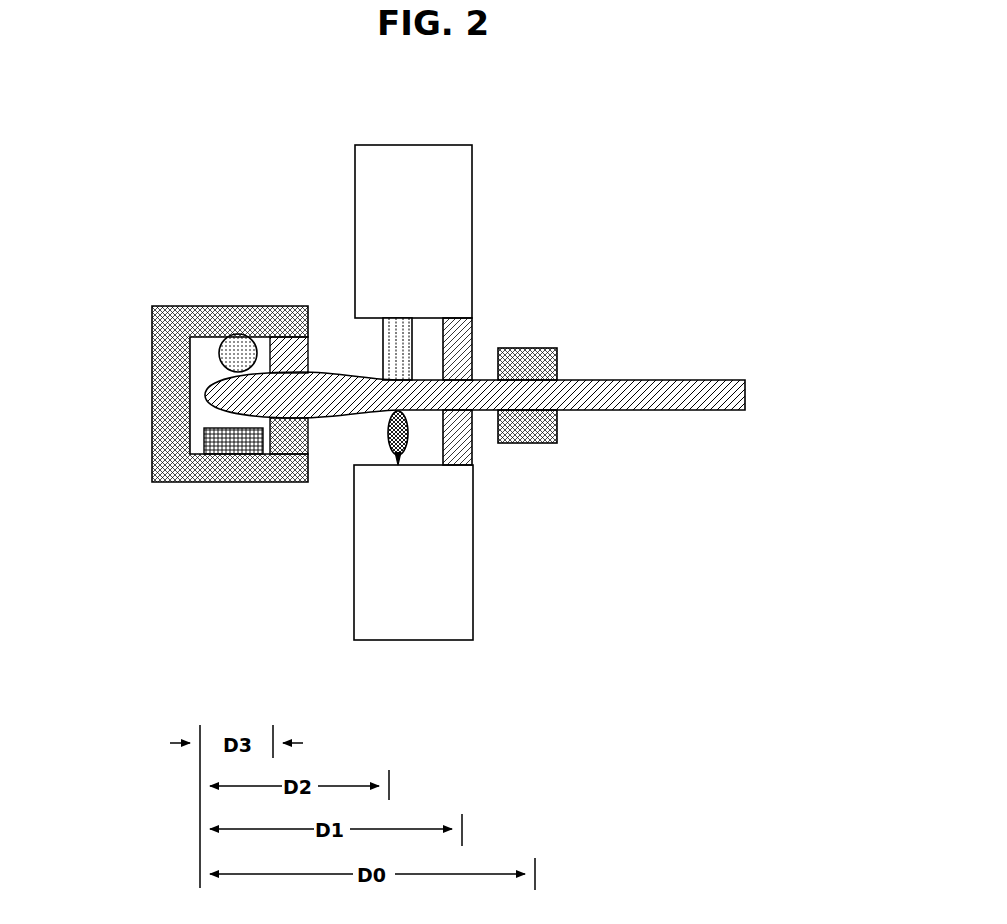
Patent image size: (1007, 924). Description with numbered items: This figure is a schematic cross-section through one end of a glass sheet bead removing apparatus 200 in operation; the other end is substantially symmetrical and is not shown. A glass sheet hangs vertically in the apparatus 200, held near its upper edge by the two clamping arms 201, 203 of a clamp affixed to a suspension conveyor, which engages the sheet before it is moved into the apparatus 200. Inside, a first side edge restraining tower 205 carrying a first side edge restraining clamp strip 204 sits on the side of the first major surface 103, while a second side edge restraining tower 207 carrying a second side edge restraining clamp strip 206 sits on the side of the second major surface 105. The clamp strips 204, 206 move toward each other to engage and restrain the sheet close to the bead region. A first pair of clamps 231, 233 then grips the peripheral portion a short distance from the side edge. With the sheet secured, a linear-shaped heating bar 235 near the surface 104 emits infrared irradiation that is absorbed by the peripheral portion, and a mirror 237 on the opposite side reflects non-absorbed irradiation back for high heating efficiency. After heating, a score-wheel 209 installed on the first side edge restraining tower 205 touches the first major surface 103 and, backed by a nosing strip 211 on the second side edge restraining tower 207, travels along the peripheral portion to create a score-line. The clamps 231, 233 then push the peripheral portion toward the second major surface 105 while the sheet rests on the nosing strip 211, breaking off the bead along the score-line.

The glass sheet bead removing apparatus 200 is at (573, 112).
The first major surface 103 is at (657, 410).
The surface 104 is at (207, 395).
The second major surface 105 is at (597, 380).
The clamping arm 201 is at (535, 444).
The clamping arm 203 is at (522, 348).
The first side edge restraining clamp strip 204 is at (473, 452).
The first side edge restraining tower 205 is at (418, 610).
The second side edge restraining clamp strip 206 is at (463, 333).
The second side edge restraining tower 207 is at (418, 172).
The score-wheel 209 is at (388, 434).
The nosing strip 211 is at (383, 360).
The first pair of clamps 231 is at (270, 352).
The first pair of clamps 233 is at (294, 456).
The linear-shaped heating bar 235 is at (216, 347).
The mirror 237 is at (242, 440).